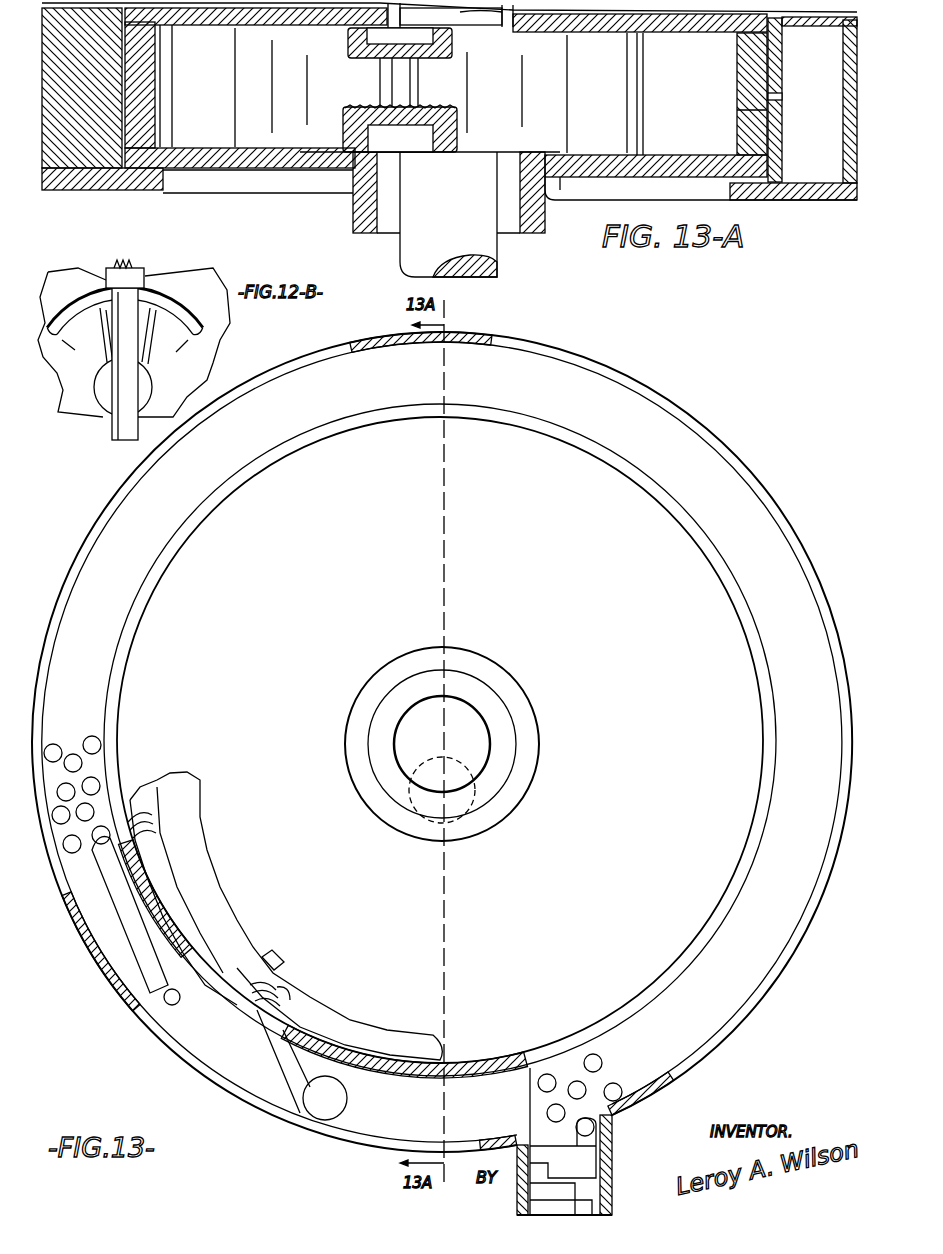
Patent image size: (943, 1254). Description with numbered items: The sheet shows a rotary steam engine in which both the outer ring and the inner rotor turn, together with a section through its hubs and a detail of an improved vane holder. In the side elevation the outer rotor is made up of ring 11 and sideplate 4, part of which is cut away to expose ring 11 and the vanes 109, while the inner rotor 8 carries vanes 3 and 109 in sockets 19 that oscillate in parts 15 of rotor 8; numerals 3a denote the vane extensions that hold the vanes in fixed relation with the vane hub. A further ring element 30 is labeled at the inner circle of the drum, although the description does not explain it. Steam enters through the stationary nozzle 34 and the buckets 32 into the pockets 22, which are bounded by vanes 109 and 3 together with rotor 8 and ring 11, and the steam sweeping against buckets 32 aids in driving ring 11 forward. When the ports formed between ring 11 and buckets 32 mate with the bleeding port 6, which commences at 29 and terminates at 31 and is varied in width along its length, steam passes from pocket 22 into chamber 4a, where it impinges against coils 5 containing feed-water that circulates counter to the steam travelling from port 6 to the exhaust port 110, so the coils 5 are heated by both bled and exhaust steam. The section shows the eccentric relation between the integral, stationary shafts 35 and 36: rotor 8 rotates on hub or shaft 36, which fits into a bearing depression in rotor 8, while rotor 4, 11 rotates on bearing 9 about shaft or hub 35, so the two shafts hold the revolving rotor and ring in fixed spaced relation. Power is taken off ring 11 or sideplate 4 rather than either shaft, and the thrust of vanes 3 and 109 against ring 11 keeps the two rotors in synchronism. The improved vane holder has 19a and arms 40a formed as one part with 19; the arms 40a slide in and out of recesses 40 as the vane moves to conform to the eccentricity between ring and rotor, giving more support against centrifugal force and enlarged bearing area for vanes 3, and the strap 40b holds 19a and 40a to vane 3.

In FIG. 13-A, the vane 3 is at (397, 72).
In FIG. 12-B, the vane extension 3a is at (118, 430).
In FIG. 13-A, the sideplate 4 is at (313, 163).
In FIG. 13, the sideplate 4 is at (528, 752).
In FIG. 13, the chamber 4a is at (752, 512).
In FIG. 13, the coils 5 is at (70, 847).
In FIG. 13, the bleeding port 6 is at (166, 564).
In FIG. 13-A, the inner rotor 8 is at (253, 142).
In FIG. 13-A, the bearing 9 is at (352, 40).
In FIG. 13, the bearing 9 is at (493, 708).
In FIG. 13-A, the ring 11 is at (780, 142).
In FIG. 13, the ring 11 is at (227, 947).
In FIG. 13-A, the rotor parts 15 is at (297, 146).
In FIG. 12-B, the rotor parts 15 is at (165, 392).
In FIG. 13-A, the vane socket 19 is at (385, 90).
In FIG. 12-B, the vane socket 19 is at (103, 387).
In FIG. 12-B, the vane holder part 19a is at (107, 357).
In FIG. 13, the pocket 22 is at (183, 815).
In FIG. 13, the commencement of bleeding port 29 is at (132, 848).
In FIG. 13, the drum ring 30 is at (449, 409).
In FIG. 13, the termination of bleeding port 31 is at (517, 1082).
In FIG. 13, the buckets 32 is at (136, 835).
In FIG. 13, the nozzle 34 is at (303, 1103).
In FIG. 13-A, the shaft 35 is at (413, 247).
In FIG. 13, the shaft 35 is at (372, 1163).
In FIG. 13-A, the shaft 36 is at (375, 133).
In FIG. 13, the shaft 36 is at (427, 818).
In FIG. 12-B, the recesses 40 is at (55, 330).
In FIG. 12-B, the arms 40a is at (77, 295).
In FIG. 12-B, the strap 40b is at (125, 273).
In FIG. 13, the vane 109 is at (272, 957).
In FIG. 13, the exhaust port 110 is at (530, 1217).